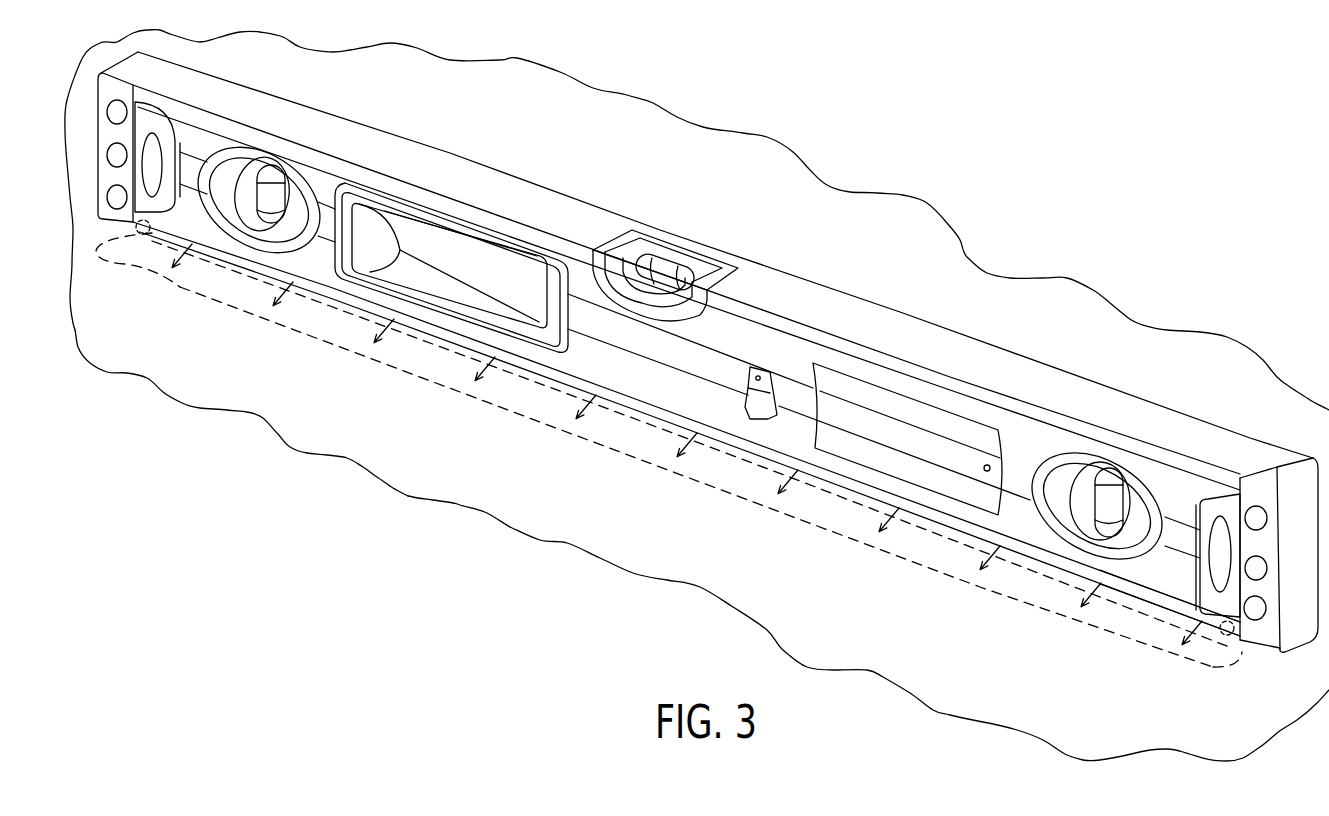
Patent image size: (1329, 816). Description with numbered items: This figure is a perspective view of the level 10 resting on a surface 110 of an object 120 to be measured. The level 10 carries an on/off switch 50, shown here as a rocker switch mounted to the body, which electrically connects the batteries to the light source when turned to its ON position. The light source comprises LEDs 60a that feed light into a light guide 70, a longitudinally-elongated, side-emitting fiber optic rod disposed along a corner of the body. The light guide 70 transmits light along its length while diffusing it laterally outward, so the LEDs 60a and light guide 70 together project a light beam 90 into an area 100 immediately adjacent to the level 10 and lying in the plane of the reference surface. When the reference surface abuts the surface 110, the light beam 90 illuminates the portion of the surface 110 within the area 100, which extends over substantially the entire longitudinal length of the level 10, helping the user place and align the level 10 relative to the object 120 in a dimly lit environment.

The level 10 is at (847, 312).
The on/off switch 50 is at (766, 365).
The LEDs 60a is at (141, 234).
The light guide 70 is at (1112, 583).
The light beam 90 is at (620, 428).
The area 100 is at (980, 587).
The surface 110 is at (401, 443).
The object 120 is at (409, 498).